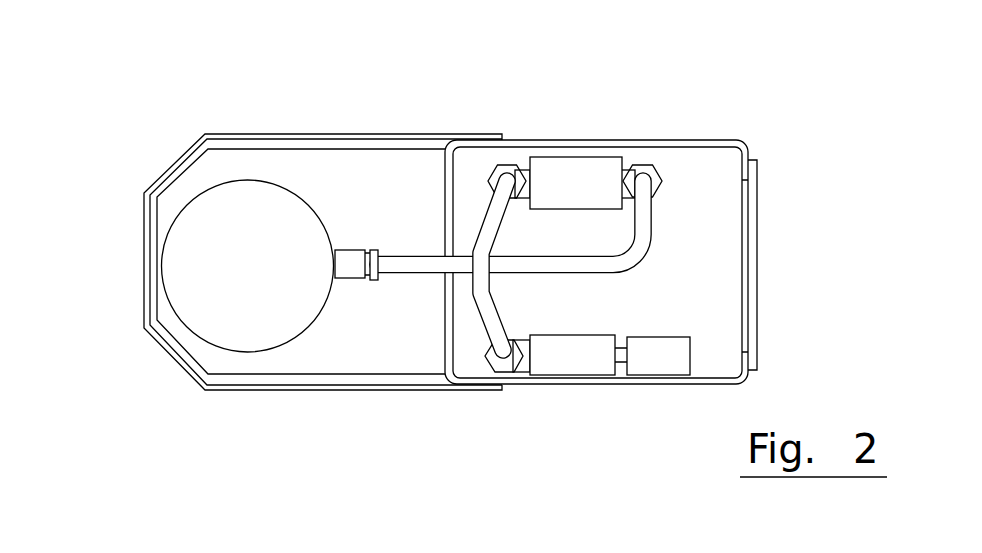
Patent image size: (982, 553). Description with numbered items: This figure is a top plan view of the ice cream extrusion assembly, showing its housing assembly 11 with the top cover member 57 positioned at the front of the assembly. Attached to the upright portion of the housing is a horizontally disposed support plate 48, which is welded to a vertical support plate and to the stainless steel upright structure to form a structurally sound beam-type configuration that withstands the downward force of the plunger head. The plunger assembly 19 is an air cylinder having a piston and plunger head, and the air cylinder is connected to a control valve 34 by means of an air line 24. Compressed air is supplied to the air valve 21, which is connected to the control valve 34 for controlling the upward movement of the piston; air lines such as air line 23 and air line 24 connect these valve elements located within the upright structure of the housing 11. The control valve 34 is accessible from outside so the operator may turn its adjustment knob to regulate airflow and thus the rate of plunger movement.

The housing assembly 11 is at (772, 235).
The plunger assembly 19 is at (312, 333).
The air valve 21 is at (592, 360).
The air line 23 is at (488, 318).
The air line 24 is at (642, 235).
The control valve 34 is at (568, 178).
The horizontal support plate 48 is at (343, 192).
The top cover member 57 is at (182, 158).